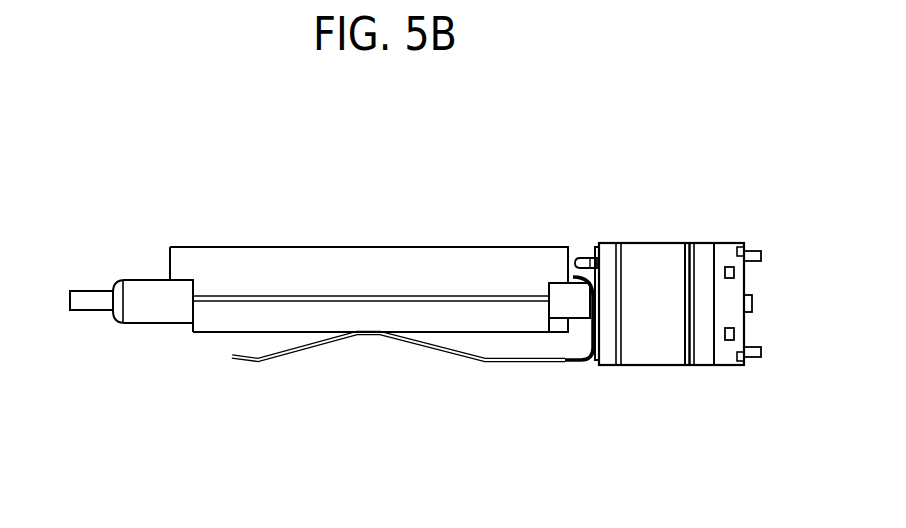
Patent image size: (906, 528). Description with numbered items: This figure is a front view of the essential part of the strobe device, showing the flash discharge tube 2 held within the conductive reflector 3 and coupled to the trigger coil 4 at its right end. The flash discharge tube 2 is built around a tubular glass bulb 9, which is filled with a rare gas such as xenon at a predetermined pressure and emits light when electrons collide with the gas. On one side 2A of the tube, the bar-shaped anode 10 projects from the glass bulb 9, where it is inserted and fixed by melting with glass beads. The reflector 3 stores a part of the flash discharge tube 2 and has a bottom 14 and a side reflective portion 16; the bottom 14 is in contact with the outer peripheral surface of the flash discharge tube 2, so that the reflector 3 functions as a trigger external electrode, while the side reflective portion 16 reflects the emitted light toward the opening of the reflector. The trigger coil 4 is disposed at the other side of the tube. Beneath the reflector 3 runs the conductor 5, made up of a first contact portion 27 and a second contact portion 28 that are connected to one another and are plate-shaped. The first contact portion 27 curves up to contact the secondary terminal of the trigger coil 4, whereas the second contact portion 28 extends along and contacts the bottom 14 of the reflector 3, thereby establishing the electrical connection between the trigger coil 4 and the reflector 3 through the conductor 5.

The flash discharge tube 2 is at (165, 332).
The one side 2A is at (132, 300).
The conductive reflector 3 is at (387, 173).
The trigger coil 4 is at (652, 222).
The conductor 5 is at (437, 435).
The tubular glass bulb 9 is at (178, 293).
The anode 10 is at (83, 303).
The bottom 14 is at (323, 323).
The side reflective portion 16 is at (365, 277).
The first contact portion 27 is at (590, 278).
The second contact portion 28 is at (381, 333).